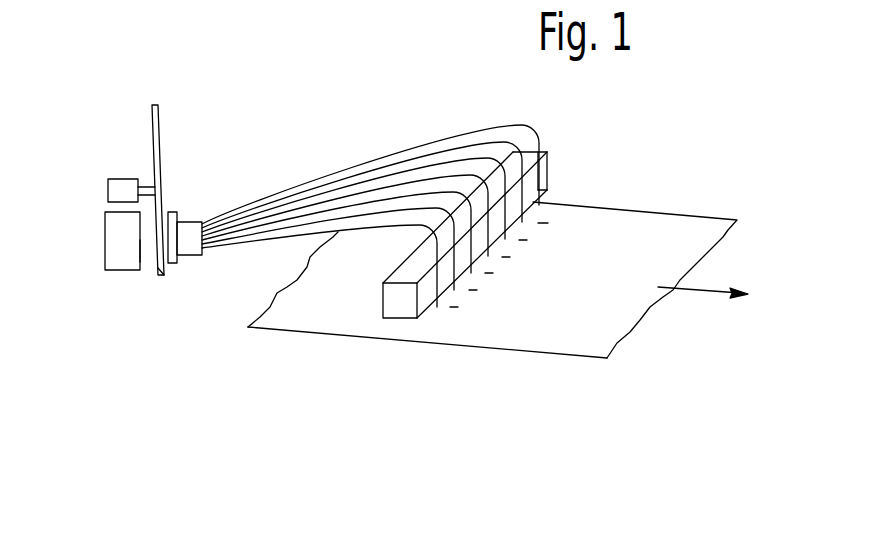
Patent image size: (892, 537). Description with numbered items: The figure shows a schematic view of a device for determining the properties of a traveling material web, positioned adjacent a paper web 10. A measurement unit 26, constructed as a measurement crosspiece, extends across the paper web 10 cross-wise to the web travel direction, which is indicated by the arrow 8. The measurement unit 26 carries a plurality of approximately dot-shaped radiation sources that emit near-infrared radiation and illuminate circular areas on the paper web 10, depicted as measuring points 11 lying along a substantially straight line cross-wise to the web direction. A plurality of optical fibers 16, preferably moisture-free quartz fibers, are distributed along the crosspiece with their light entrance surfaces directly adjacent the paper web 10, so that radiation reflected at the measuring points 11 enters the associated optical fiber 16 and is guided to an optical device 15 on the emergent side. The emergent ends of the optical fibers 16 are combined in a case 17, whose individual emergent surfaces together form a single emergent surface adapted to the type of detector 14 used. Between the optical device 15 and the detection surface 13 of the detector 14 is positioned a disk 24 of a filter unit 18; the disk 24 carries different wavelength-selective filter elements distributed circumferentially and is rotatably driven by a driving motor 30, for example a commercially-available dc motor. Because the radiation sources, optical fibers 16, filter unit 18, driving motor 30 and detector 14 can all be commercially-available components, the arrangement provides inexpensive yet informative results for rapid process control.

The direction of movement 8 is at (685, 286).
The paper web 10 is at (558, 327).
The measuring points 11 is at (500, 257).
The detection surface 13 is at (147, 252).
The detector 14 is at (115, 245).
The optical device 15 is at (185, 277).
The optical fibers 16 is at (441, 205).
The case 17 is at (187, 228).
The filter unit 18 is at (168, 143).
The disk 24 is at (163, 279).
The measurement unit 26 is at (392, 297).
The driving motor 30 is at (120, 188).